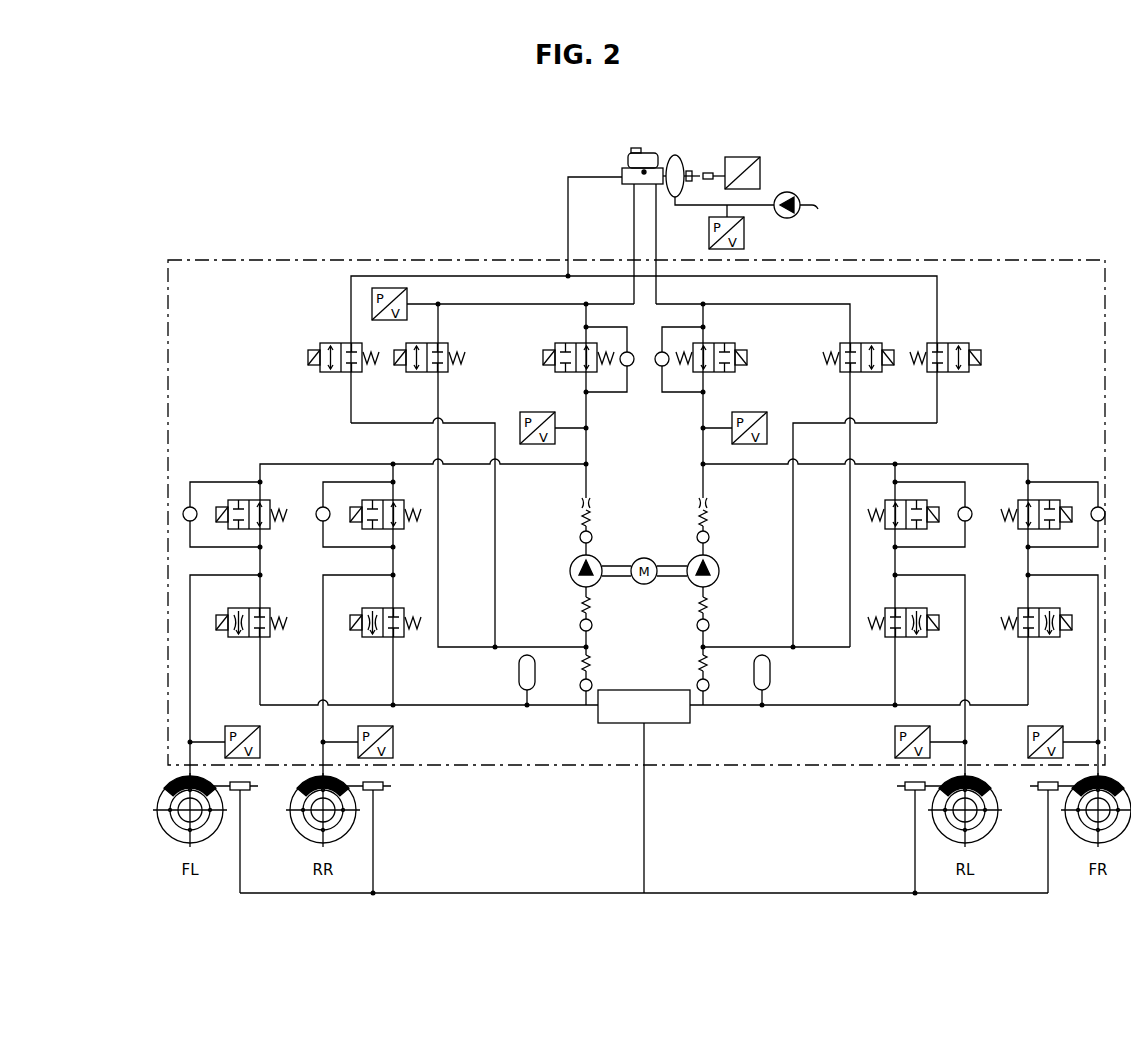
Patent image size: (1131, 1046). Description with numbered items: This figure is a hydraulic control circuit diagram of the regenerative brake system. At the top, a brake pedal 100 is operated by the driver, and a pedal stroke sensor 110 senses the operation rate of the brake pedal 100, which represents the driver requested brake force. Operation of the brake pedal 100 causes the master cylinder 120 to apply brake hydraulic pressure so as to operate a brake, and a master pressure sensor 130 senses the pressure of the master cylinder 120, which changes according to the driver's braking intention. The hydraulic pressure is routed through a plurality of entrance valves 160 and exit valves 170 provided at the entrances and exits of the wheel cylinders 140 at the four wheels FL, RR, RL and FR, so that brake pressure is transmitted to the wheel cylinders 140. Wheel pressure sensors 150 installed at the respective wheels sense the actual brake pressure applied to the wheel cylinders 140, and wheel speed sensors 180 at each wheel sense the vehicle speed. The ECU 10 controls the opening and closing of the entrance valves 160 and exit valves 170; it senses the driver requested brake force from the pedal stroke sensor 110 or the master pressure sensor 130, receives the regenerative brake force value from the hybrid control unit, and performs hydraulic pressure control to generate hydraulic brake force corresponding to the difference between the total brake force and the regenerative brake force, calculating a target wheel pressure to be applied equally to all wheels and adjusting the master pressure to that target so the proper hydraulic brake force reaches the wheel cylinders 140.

The ECU 10 is at (613, 723).
The brake pedal 100 is at (698, 182).
The pedal stroke sensor 110 is at (746, 233).
The master cylinder 120 is at (628, 166).
The master pressure sensor 130 is at (390, 288).
The wheel cylinders 140 is at (170, 798).
The wheel pressure sensors 150 is at (262, 742).
The entrance valves 160 is at (247, 529).
The exit valves 170 is at (247, 637).
The wheel speed sensors 180 is at (644, 834).